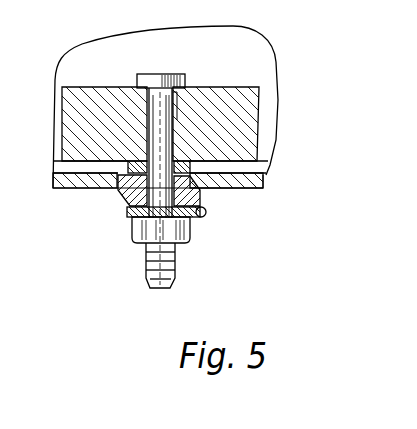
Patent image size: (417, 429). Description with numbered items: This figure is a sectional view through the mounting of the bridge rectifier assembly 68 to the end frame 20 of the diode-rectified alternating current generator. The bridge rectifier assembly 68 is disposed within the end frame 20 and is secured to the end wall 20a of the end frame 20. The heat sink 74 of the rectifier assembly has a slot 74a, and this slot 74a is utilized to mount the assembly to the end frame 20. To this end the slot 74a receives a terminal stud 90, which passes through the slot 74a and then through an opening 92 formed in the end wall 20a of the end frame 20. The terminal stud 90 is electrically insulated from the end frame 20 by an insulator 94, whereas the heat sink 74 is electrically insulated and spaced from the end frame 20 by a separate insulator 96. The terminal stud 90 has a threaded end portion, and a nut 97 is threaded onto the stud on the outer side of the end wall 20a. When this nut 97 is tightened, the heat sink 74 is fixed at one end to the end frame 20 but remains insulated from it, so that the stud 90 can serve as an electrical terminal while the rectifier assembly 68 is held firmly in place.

The end frame 20 is at (53, 167).
The end wall 20a is at (270, 167).
The bridge rectifier assembly 68 is at (115, 84).
The heat sink 74 is at (219, 89).
The slot 74a is at (177, 118).
The terminal stud 90 is at (152, 74).
The opening 92 is at (200, 196).
The insulator 94 is at (130, 213).
The insulator 96 is at (127, 178).
The nut 97 is at (186, 243).